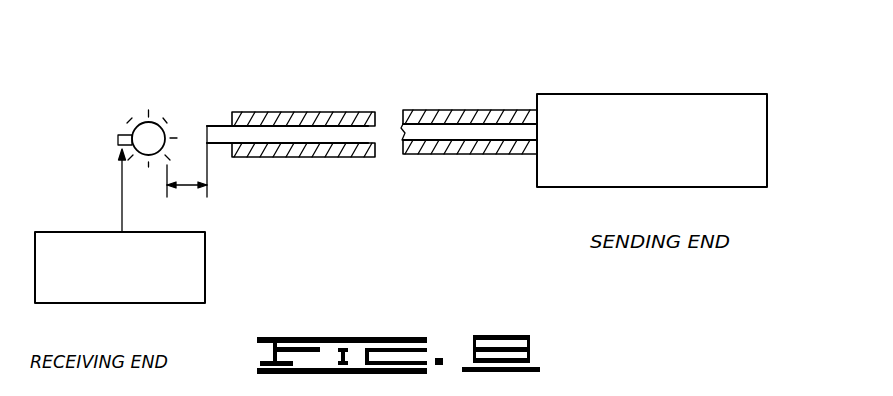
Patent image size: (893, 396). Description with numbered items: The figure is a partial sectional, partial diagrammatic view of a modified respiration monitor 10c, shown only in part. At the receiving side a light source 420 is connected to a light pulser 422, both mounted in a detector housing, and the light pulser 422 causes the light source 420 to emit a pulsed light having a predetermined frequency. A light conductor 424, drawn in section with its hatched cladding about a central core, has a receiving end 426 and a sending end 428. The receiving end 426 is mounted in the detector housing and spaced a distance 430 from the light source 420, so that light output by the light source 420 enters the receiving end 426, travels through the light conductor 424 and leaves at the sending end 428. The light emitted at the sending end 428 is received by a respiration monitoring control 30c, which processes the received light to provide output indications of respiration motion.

The respiration monitor 10c is at (430, 92).
The respiration monitoring control 30c is at (630, 94).
The light source 420 is at (138, 122).
The light pulser 422 is at (100, 304).
The light conductor 424 is at (308, 158).
The receiving end 426 is at (207, 126).
The sending end 428 is at (533, 156).
The distance 430 is at (187, 188).